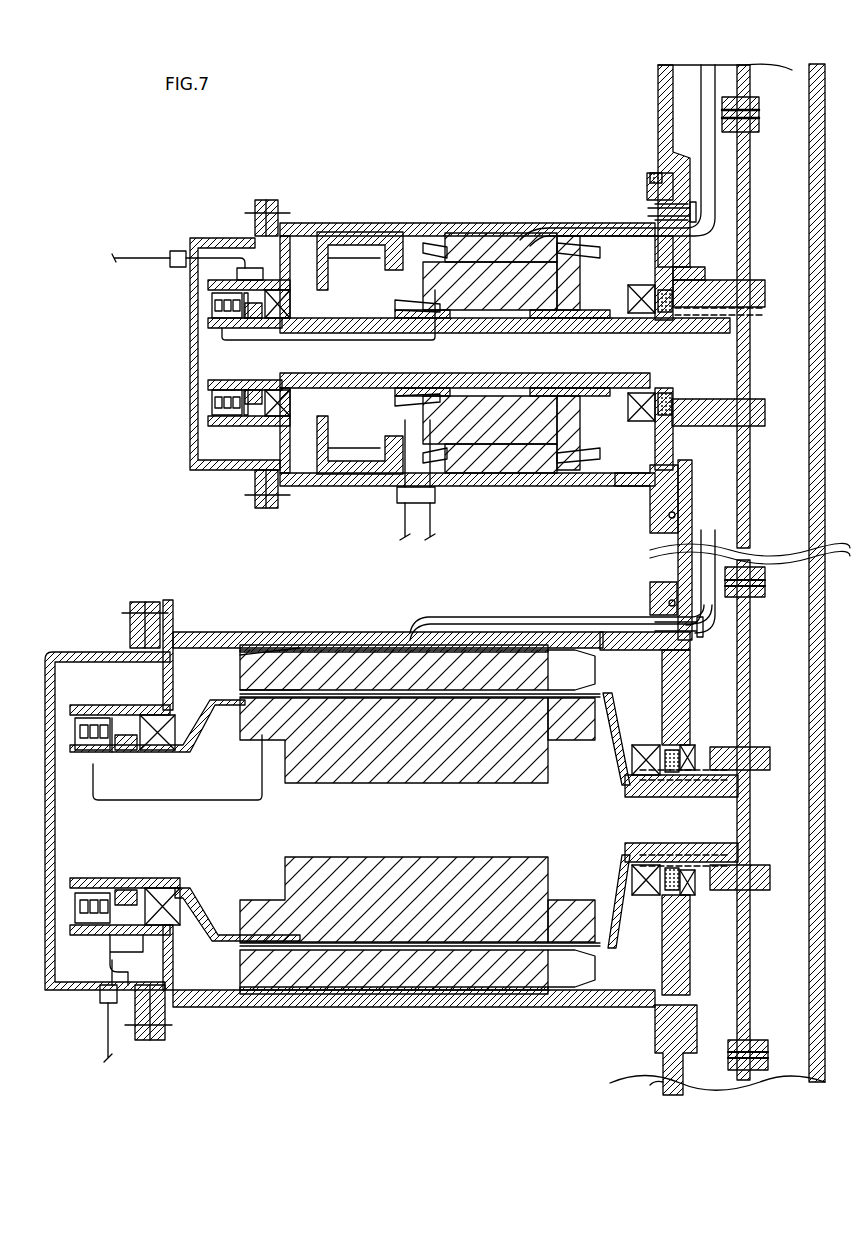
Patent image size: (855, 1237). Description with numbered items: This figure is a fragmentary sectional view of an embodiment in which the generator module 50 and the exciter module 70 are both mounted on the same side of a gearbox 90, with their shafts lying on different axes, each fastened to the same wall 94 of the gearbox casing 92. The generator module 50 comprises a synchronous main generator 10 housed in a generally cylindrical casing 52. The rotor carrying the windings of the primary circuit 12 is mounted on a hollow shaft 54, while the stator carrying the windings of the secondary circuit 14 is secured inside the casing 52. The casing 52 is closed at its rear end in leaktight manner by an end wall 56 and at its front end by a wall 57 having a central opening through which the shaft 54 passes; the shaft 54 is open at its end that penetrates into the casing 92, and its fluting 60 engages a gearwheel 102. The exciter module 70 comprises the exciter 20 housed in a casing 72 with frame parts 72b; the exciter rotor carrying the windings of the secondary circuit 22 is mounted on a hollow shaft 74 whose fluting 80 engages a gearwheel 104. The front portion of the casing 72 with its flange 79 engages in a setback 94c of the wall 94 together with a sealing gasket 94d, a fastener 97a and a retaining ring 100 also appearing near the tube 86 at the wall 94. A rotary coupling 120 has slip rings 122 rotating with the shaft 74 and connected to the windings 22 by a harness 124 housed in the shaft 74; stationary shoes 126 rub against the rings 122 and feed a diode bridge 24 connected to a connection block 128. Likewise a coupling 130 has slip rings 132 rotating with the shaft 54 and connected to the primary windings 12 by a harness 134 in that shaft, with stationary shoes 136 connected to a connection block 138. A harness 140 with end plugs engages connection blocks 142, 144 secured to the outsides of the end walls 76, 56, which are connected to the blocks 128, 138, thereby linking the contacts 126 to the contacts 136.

The synchronous main generator 10 is at (398, 845).
The windings of the primary circuit 12 is at (420, 783).
The windings of the secondary circuit 14 is at (362, 670).
The exciter 20 is at (400, 232).
The windings of the secondary circuit 22 is at (480, 313).
The diode bridge 24 is at (258, 323).
The generator module 50 is at (320, 1018).
The casing 52 is at (375, 1012).
The shaft 54 is at (615, 737).
The end wall 56 is at (48, 662).
The wall 57 is at (652, 746).
The set of fluting 60 is at (730, 792).
The exciter module 70 is at (393, 602).
The casing 72 is at (615, 490).
The stator support plate 72b is at (332, 222).
The shaft 74 is at (650, 336).
The end wall 76 is at (190, 432).
The flange 79 is at (648, 502).
The set of fluting 80 is at (728, 335).
The cable conduit 86 is at (528, 214).
The gearbox 90 is at (755, 64).
The casing 92 is at (653, 1081).
The wall 94 is at (663, 112).
The setback 94c is at (653, 178).
The sealing gasket 94d is at (668, 522).
The bolt 97a is at (655, 205).
The clamp ring 100 is at (752, 143).
The gearwheel 102 is at (752, 647).
The gearwheel 104 is at (750, 217).
The rotary coupling 120 is at (208, 308).
The slip rings 122 is at (212, 326).
The harness 124 is at (360, 341).
The stationary contacts or shoes 126 is at (212, 300).
The connection block 128 is at (246, 268).
The coupling 130 is at (74, 729).
The slip rings 132 is at (105, 766).
The harness 134 is at (180, 799).
The stationary contacts or shoes 136 is at (80, 918).
The connection block 138 is at (142, 953).
The harness 140 is at (143, 257).
The connection block 142 is at (178, 250).
The connection block 144 is at (98, 997).